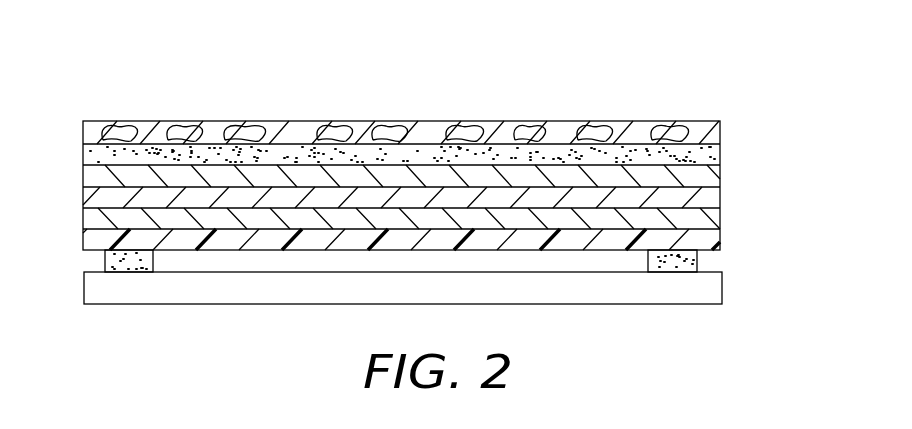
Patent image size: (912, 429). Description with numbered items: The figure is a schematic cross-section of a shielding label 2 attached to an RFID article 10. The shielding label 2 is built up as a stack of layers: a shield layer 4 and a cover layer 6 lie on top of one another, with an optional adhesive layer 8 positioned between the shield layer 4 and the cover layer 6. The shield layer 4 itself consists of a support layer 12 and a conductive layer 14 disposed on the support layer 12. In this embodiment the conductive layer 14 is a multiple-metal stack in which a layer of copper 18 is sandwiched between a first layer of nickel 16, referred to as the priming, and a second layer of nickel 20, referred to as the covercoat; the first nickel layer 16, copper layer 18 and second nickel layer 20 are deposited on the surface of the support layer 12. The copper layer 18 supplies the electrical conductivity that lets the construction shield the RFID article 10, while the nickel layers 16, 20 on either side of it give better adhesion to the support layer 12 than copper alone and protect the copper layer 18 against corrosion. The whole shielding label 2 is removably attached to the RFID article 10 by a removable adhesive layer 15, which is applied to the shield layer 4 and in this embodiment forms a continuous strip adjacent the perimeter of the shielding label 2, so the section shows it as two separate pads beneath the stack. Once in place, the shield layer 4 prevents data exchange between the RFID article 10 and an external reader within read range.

The shielding label 2 is at (165, 57).
The shield layer 4 is at (832, 155).
The cover layer 6 is at (720, 127).
The adhesive layer 8 is at (720, 153).
The RFID article 10 is at (722, 291).
The support layer 12 is at (720, 241).
The conductive layer 14 is at (788, 160).
The removable adhesive layer 15 is at (105, 262).
The first layer of nickel 16 is at (720, 222).
The layer of copper 18 is at (720, 201).
The second layer of nickel 20 is at (720, 175).